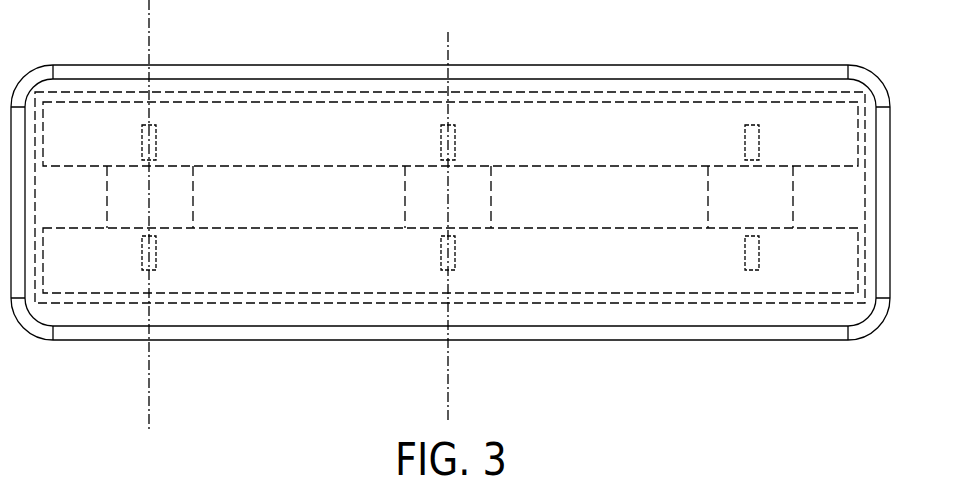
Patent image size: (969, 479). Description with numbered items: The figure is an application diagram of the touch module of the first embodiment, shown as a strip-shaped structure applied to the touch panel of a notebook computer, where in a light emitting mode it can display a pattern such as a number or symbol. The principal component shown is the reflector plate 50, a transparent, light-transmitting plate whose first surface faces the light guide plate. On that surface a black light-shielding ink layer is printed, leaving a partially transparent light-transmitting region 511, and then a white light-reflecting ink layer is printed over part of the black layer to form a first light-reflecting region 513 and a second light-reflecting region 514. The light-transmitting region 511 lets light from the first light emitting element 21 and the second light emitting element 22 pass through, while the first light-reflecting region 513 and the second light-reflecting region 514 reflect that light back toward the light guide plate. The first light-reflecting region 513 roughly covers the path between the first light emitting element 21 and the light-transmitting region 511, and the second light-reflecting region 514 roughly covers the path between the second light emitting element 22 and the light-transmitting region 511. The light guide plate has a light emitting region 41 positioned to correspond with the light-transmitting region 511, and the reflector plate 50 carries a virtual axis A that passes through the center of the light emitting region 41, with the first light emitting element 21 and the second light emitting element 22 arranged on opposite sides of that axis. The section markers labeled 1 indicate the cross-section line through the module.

The reflector plate 50 is at (405, 92).
The light-transmitting region 511 is at (492, 208).
The first light-reflecting region 513 is at (347, 128).
The second light-reflecting region 514 is at (350, 255).
The first light emitting element 21 is at (448, 145).
The second light emitting element 22 is at (450, 250).
The light emitting region 41 is at (442, 210).
The virtual axis A is at (447, 212).
The section line 1- 1 is at (124, 413).